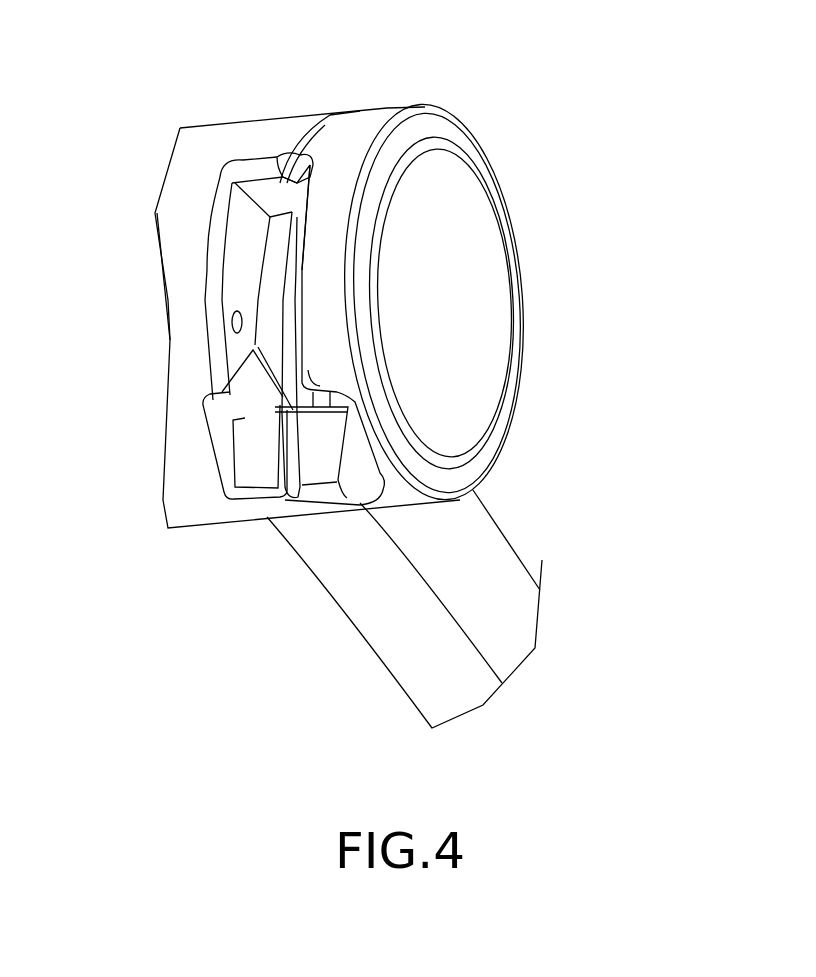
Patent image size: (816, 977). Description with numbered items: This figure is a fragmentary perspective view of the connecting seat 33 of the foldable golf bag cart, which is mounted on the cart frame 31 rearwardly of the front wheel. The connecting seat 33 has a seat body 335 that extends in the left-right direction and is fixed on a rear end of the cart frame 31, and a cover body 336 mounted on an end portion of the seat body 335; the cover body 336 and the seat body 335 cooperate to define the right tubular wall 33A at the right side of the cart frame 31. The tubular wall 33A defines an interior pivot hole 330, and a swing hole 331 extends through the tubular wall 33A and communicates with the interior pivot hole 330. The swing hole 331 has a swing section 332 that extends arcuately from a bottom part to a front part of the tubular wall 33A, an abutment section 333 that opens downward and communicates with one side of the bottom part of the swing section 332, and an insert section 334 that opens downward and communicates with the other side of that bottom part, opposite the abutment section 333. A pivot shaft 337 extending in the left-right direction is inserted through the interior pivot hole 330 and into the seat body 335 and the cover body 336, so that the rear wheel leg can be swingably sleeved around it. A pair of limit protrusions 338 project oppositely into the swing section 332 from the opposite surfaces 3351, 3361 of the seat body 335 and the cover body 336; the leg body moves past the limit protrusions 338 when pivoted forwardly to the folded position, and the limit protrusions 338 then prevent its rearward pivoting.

The connecting seat 33 is at (237, 118).
The swing hole 331 is at (262, 197).
The tubular wall 33A is at (293, 158).
The cover body 336 is at (470, 150).
The seat body 335 is at (213, 160).
The swing section 332 is at (297, 217).
The surface 3361 is at (305, 287).
The pivot shaft 337 is at (275, 315).
The interior pivot hole 330 is at (280, 278).
The surface 3351 is at (208, 288).
The limit protrusion 338 is at (232, 326).
The insert section 334 is at (230, 447).
The abutment section 333 is at (372, 448).
The cart frame 31 is at (358, 583).